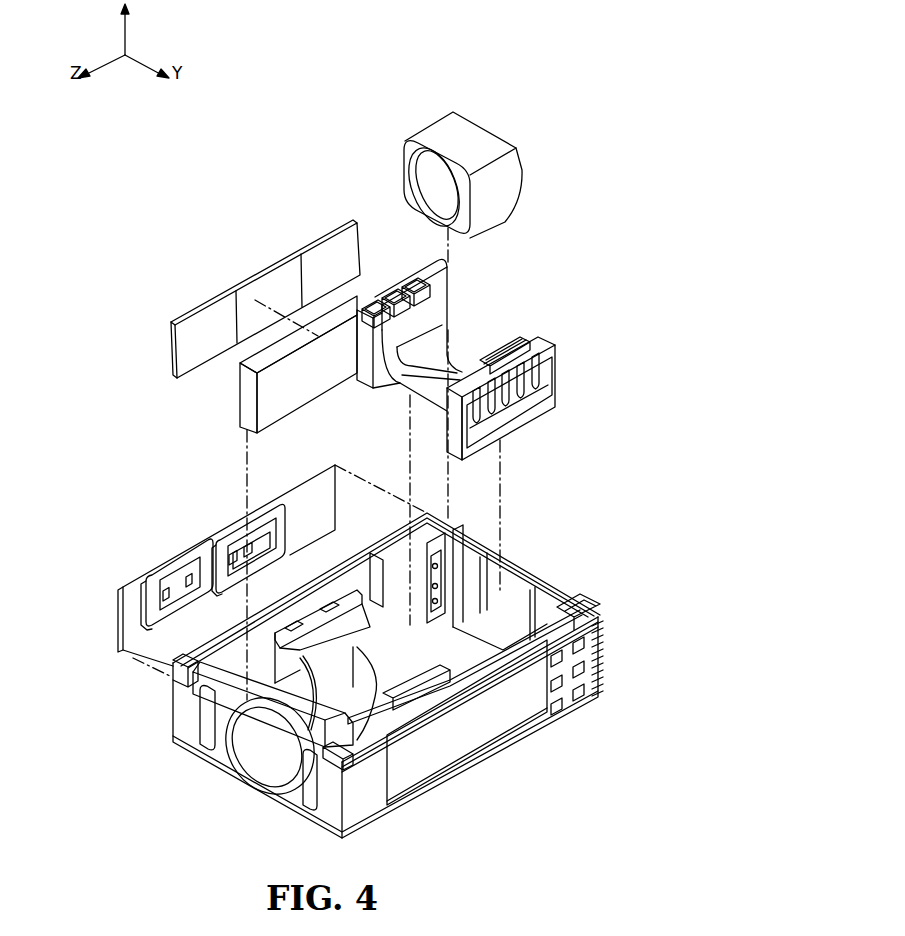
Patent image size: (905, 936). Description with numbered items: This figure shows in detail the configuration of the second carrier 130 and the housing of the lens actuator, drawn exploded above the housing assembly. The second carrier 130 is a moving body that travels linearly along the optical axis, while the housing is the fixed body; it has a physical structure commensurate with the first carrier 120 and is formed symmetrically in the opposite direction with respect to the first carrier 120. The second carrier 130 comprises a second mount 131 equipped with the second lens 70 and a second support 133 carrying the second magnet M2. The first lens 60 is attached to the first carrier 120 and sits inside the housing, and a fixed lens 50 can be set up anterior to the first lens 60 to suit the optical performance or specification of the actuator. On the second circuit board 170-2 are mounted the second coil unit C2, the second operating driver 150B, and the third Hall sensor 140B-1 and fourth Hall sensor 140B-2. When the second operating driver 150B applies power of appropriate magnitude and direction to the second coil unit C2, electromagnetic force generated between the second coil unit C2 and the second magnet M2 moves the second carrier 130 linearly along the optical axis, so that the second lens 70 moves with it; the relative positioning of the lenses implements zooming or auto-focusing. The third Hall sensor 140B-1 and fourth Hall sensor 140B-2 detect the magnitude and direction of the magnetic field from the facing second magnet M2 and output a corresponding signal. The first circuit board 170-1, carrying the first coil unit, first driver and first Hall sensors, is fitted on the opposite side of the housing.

The second lens 70 is at (478, 138).
The second magnet M2 is at (253, 272).
The second support 133 is at (370, 298).
The second carrier 130 is at (526, 290).
The second mount 131 is at (540, 340).
The second operating driver 150B is at (263, 537).
The first lens 60 is at (357, 640).
The second coil unit C2 is at (199, 542).
The third Hall sensor 140B-1 is at (165, 590).
The fourth Hall sensor 140B-2 is at (188, 576).
The second circuit board 170-2 is at (133, 620).
The fixed lens 50 is at (270, 752).
The first carrier 120 is at (448, 690).
The first circuit board 170-1 is at (428, 768).